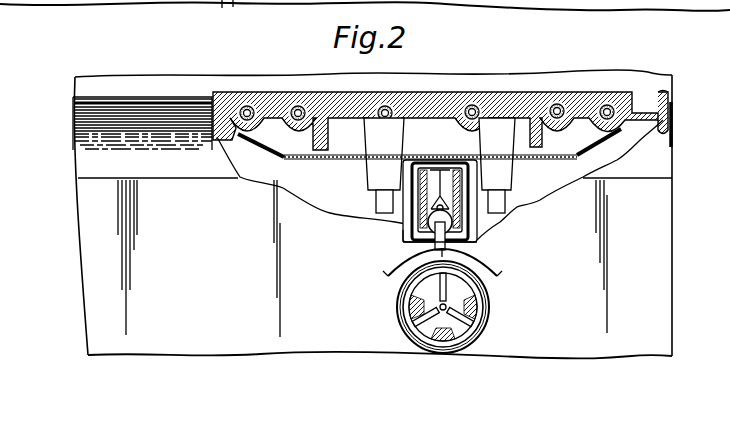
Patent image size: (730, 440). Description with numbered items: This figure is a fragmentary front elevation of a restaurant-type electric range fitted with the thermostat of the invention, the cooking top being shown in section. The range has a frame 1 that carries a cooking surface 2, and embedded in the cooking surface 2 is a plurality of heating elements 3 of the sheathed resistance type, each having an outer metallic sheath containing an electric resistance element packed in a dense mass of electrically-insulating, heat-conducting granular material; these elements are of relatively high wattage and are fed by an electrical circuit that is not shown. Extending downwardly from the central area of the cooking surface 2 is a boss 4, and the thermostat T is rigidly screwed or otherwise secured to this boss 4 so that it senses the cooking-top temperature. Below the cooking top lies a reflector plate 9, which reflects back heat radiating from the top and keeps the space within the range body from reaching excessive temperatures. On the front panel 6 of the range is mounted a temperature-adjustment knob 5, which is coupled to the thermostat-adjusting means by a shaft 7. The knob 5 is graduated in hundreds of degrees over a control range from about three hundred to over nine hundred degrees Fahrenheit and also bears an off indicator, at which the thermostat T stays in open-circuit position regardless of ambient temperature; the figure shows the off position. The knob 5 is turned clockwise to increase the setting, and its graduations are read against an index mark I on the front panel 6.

The frame 1 is at (660, 231).
The cooking surface 2 is at (540, 92).
The heating elements 3 is at (470, 92).
The boss 4 is at (448, 144).
The temperature-adjustment knob 5 is at (488, 323).
The front panel 6 is at (582, 298).
The shaft 7 is at (478, 240).
The reflector plate 9 is at (344, 160).
The thermostat T is at (408, 222).
The index mark I is at (473, 257).